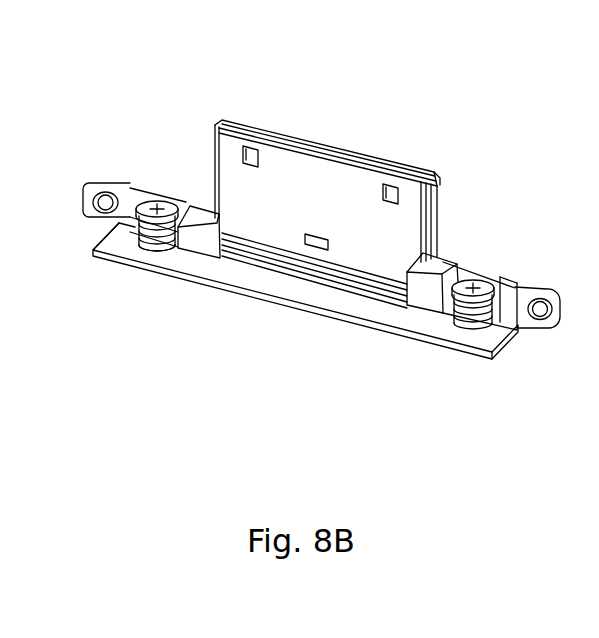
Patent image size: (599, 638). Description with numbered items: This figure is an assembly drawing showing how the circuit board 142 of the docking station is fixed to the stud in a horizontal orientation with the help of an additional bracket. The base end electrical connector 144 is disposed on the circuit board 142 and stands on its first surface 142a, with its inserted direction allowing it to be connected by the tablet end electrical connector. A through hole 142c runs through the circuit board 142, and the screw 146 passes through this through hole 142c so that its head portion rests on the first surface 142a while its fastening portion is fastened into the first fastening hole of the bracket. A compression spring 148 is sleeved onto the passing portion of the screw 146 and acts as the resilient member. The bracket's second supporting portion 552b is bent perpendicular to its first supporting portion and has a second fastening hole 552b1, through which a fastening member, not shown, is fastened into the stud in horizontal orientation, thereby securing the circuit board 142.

The circuit board 142 is at (95, 254).
The first surface 142a is at (227, 274).
The through hole 142c is at (169, 260).
The base end electrical connector 144 is at (333, 150).
The screw 146 is at (150, 204).
The compression spring 148 is at (125, 223).
The second supporting portion 552b is at (473, 260).
The second fastening hole 552b1 is at (551, 289).